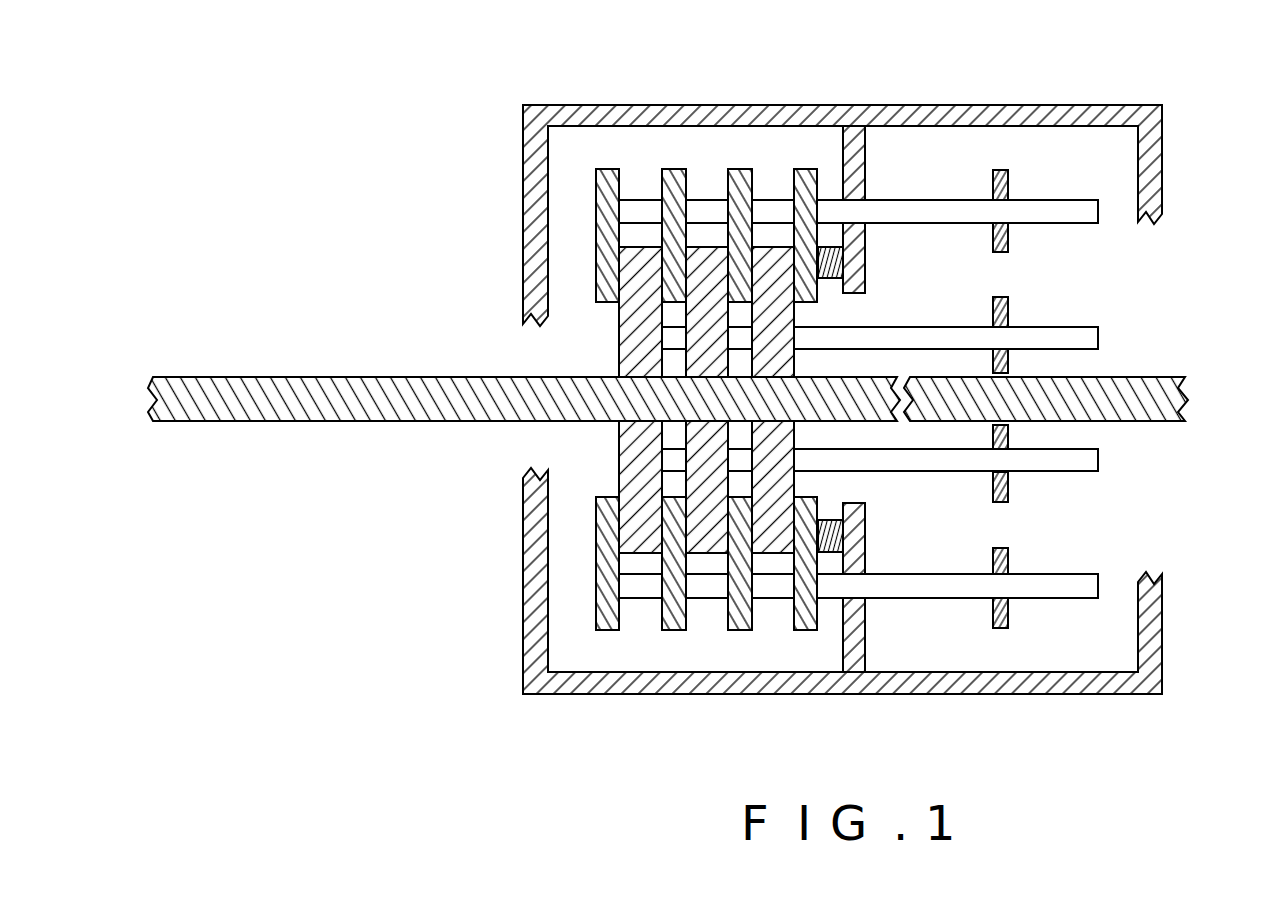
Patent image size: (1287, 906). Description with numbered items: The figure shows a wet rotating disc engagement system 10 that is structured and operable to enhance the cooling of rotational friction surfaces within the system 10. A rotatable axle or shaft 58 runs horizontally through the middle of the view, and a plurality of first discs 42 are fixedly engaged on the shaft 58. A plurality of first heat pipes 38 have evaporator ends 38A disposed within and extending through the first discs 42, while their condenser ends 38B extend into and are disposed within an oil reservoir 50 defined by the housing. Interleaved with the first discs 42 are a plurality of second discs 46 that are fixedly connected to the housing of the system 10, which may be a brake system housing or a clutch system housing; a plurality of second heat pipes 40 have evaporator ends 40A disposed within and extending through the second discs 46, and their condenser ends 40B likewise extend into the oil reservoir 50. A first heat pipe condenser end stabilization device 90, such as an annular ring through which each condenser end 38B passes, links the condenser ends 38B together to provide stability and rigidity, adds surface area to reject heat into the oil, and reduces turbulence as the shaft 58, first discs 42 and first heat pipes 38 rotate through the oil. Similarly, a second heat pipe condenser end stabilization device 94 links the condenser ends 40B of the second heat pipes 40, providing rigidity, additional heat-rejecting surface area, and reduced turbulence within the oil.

The wet rotating disc engagement system 10 is at (704, 381).
The first heat pipes 38 is at (889, 338).
The evaporator ends 38A is at (742, 340).
The condenser ends 38B is at (1080, 340).
The second heat pipes 40 is at (900, 213).
The evaporator ends 40A is at (775, 207).
The condenser ends 40B is at (1092, 208).
The first discs 42 is at (775, 277).
The second discs 46 is at (807, 173).
The oil reservoir 50 is at (1068, 166).
The shaft 58 is at (285, 400).
The first heat pipe condenser end stabilization device 90 is at (1010, 440).
The second heat pipe condenser end stabilization device 94 is at (1008, 235).